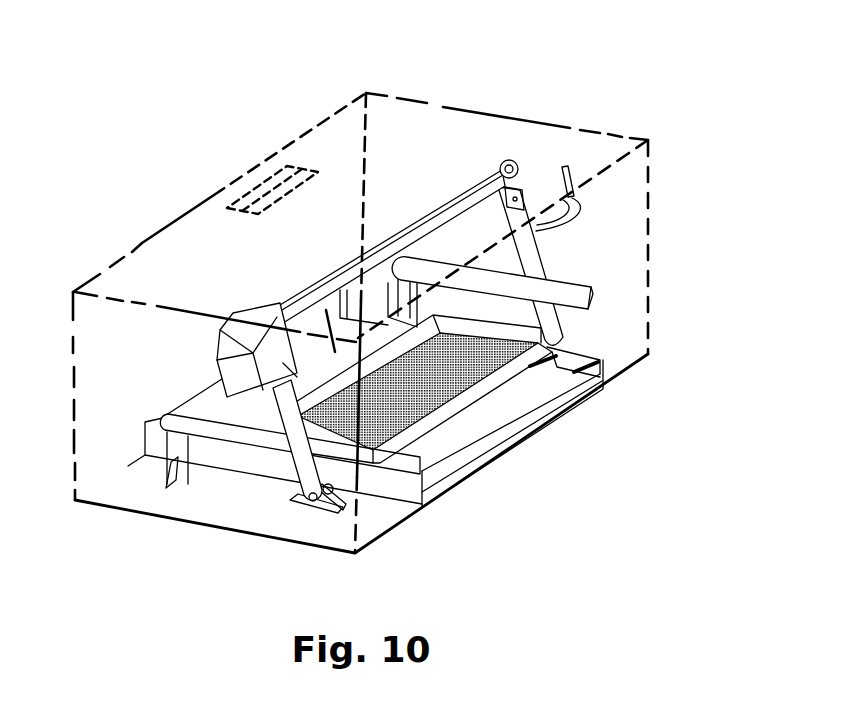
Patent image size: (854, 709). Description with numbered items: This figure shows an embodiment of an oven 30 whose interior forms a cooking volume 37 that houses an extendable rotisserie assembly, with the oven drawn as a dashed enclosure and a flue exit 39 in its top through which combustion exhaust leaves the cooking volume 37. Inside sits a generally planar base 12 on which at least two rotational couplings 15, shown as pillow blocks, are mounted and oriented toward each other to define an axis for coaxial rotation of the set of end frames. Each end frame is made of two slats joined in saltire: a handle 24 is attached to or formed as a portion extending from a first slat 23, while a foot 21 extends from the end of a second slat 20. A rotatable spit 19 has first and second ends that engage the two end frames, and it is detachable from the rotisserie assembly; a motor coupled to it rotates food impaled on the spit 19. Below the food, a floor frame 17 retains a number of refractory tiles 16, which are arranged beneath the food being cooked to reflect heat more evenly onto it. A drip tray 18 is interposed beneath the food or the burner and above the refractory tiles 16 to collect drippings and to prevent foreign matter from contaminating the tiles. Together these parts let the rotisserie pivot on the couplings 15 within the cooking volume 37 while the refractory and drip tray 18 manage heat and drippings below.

The base 12 is at (222, 506).
The rotational coupling 15 is at (328, 512).
The refractory tiles 16 is at (452, 440).
The floor frame 17 is at (545, 392).
The drip tray 18 is at (596, 385).
The rotatable spit 19 is at (457, 195).
The second slat 20 is at (570, 280).
The foot 21 is at (588, 303).
The first slat 23 is at (545, 252).
The handle 24 is at (552, 175).
The oven 30 is at (22, 288).
The cooking volume 37 is at (197, 202).
The flue exit 39 is at (287, 166).